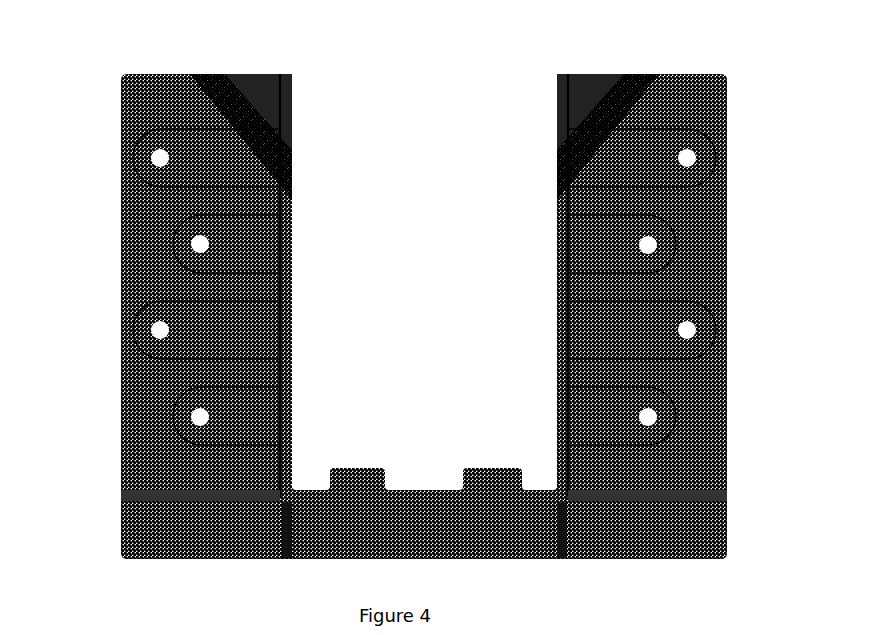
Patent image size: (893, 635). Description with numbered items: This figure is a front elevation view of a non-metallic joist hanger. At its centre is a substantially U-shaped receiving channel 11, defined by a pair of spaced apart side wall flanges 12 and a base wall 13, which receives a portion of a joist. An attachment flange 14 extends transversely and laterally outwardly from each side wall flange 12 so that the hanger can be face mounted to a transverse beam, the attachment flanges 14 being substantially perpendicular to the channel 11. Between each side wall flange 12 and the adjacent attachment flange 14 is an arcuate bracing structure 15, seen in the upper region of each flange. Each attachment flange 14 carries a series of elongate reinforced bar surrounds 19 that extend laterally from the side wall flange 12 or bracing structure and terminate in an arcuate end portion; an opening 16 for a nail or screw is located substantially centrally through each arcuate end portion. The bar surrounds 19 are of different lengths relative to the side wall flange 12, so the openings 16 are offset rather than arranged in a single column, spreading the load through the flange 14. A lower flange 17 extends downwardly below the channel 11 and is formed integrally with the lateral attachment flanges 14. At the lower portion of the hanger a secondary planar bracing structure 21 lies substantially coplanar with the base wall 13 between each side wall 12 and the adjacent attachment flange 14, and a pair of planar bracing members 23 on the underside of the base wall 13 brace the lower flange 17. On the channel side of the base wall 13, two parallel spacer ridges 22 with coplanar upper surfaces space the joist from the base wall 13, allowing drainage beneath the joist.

The receiving channel 11 is at (424, 282).
The side wall flange 12 is at (294, 125).
The base wall 13 is at (419, 487).
The attachment flange 14 is at (189, 68).
The arcuate bracing structure 15 is at (263, 104).
The opening 16 is at (143, 156).
The lower flange 17 is at (112, 541).
The bar surround 19 is at (137, 177).
The secondary planar bracing structure 21 is at (118, 496).
The spacer ridge 22 is at (361, 462).
The planar bracing member 23 is at (302, 537).